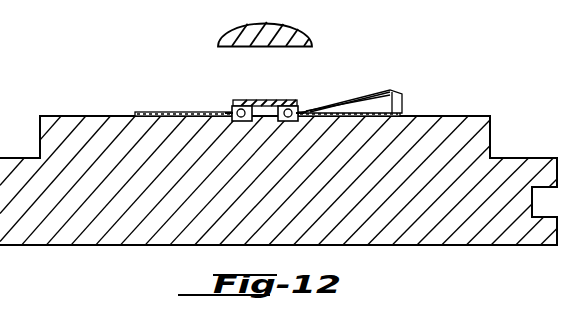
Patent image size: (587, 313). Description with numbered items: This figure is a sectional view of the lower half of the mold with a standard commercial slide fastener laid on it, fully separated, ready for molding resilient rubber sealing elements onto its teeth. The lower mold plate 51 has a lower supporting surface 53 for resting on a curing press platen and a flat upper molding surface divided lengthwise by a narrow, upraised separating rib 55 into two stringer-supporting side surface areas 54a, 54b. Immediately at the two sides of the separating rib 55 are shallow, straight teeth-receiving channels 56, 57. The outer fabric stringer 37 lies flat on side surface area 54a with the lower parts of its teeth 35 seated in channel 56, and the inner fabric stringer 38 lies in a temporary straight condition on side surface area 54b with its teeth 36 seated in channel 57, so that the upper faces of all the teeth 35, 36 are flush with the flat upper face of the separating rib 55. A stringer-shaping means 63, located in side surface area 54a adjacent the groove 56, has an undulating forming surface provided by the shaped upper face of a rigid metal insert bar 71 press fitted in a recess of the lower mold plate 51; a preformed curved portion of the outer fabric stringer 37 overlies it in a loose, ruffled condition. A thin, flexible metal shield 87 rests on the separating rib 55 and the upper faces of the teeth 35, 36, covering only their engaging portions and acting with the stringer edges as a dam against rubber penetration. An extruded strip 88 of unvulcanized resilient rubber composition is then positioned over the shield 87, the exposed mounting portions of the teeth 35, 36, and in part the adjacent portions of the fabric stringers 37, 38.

The lower mold plate 51 is at (108, 247).
The lower supporting surface 53 is at (383, 246).
The side surface area 54a is at (82, 115).
The side surface area 54b is at (480, 116).
The outer fabric stringer 37 is at (173, 112).
The insert bar 71 is at (401, 113).
The teeth 35 is at (237, 104).
The separating rib 55 is at (245, 103).
The teeth-receiving channel 56 is at (238, 108).
The shield 87 is at (282, 103).
The teeth 36 is at (291, 108).
The teeth-receiving channel 57 is at (298, 112).
The extruded strip 88 is at (283, 42).
The stringer-shaping means 63 is at (402, 90).
The inner fabric stringer 38 is at (365, 93).